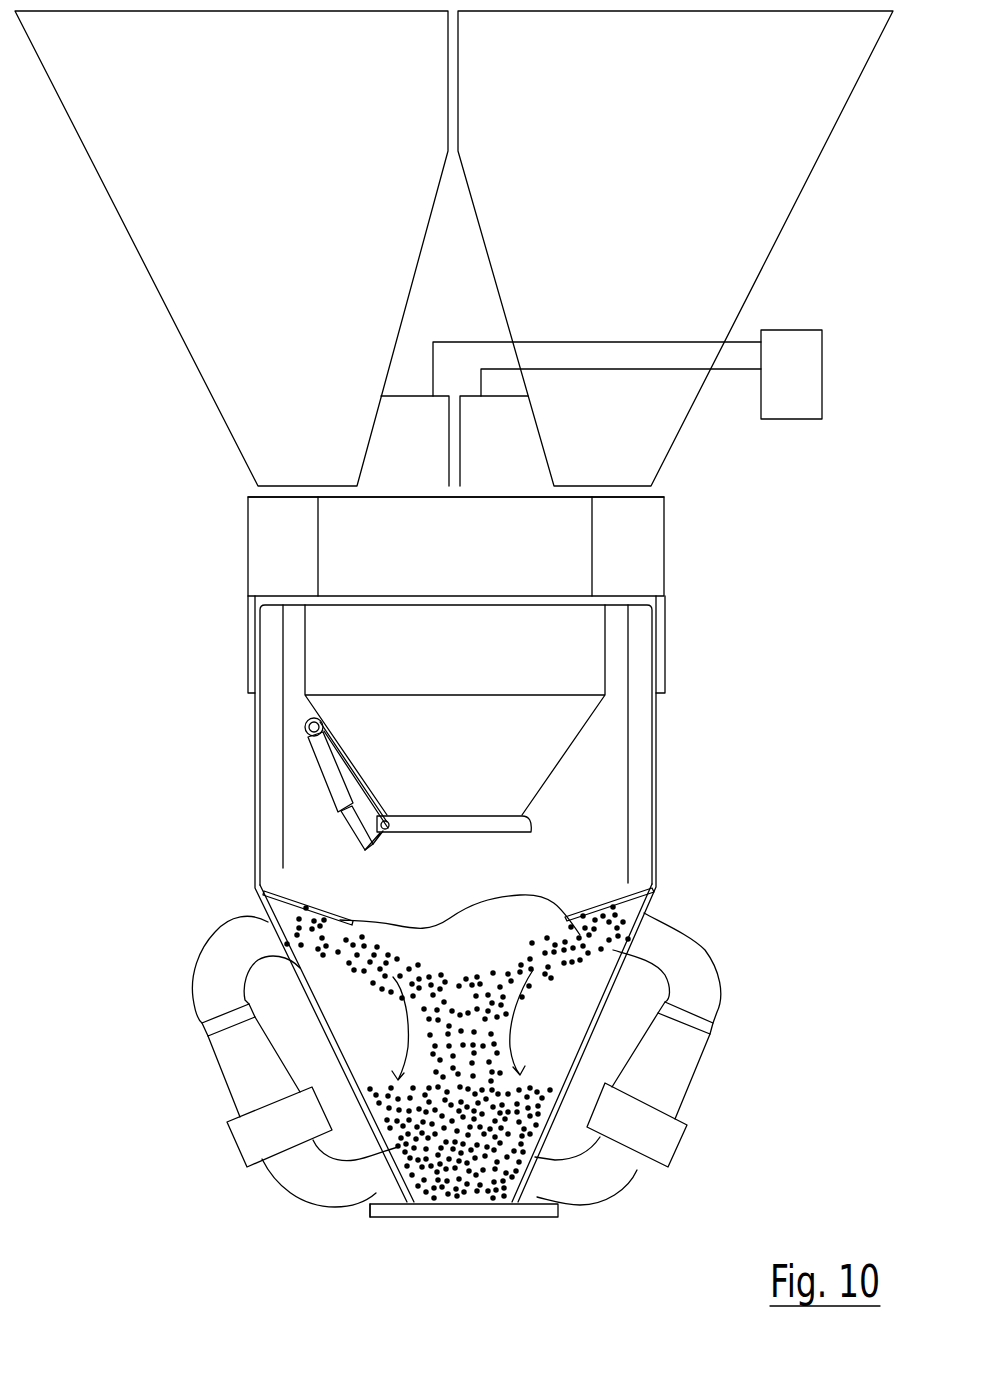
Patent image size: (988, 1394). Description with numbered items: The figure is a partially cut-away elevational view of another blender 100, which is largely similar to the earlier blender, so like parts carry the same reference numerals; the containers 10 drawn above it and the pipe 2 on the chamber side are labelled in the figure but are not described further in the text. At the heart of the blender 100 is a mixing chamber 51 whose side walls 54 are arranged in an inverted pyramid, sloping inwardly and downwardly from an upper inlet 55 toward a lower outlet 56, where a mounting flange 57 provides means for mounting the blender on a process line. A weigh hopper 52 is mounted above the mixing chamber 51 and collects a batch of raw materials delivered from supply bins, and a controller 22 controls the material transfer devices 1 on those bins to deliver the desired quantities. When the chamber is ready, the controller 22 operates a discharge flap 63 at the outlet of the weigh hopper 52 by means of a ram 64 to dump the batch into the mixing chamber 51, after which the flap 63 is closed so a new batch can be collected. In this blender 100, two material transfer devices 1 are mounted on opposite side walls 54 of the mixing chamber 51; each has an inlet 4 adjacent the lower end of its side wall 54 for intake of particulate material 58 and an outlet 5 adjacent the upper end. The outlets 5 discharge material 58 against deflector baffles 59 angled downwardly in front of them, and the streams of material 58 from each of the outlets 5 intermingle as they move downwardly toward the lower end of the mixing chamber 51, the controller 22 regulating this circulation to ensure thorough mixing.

The supply hopper / container 10 is at (231, 180).
The material transfer device 1 is at (402, 469).
The controller 22 is at (812, 345).
The blender 100 is at (745, 543).
The upper inlet 55 is at (513, 883).
The weigh hopper 52 is at (558, 737).
The ram 64 is at (323, 780).
The discharge flap 63 is at (420, 840).
The particulate material 58 is at (345, 958).
The deflector baffle plate 59 is at (258, 872).
The outlet 5 is at (258, 915).
The conduit 2 is at (212, 982).
The side wall 54 is at (317, 1022).
The mixing chamber 51 is at (312, 1065).
The inlet 4 is at (313, 1203).
The lower outlet 56 is at (478, 1217).
The mounting flange 57 is at (388, 1210).